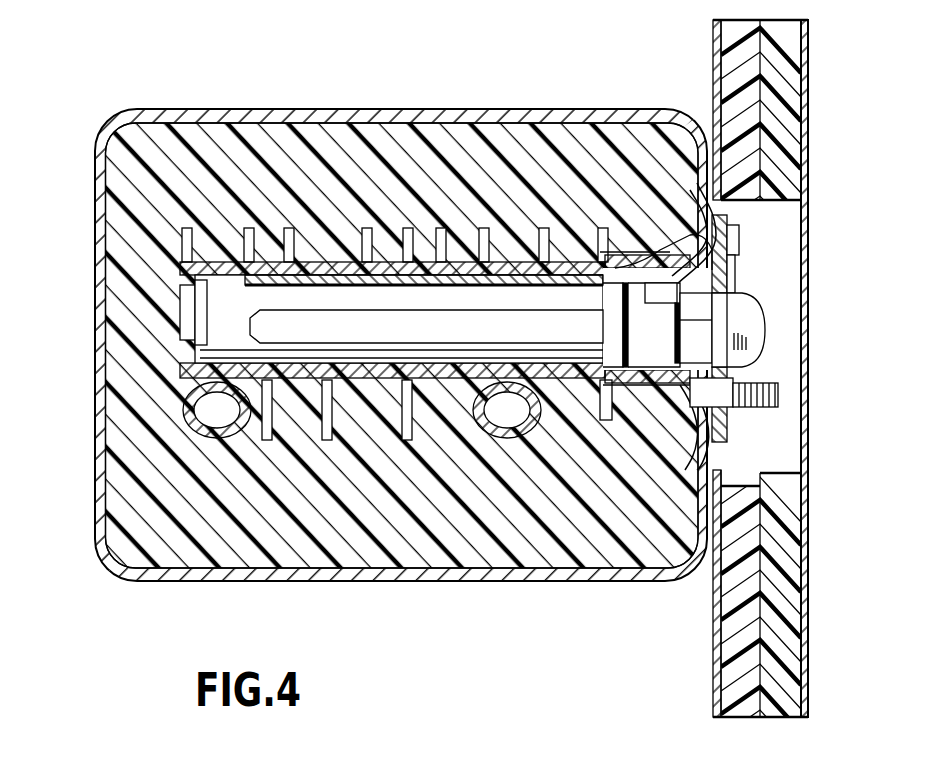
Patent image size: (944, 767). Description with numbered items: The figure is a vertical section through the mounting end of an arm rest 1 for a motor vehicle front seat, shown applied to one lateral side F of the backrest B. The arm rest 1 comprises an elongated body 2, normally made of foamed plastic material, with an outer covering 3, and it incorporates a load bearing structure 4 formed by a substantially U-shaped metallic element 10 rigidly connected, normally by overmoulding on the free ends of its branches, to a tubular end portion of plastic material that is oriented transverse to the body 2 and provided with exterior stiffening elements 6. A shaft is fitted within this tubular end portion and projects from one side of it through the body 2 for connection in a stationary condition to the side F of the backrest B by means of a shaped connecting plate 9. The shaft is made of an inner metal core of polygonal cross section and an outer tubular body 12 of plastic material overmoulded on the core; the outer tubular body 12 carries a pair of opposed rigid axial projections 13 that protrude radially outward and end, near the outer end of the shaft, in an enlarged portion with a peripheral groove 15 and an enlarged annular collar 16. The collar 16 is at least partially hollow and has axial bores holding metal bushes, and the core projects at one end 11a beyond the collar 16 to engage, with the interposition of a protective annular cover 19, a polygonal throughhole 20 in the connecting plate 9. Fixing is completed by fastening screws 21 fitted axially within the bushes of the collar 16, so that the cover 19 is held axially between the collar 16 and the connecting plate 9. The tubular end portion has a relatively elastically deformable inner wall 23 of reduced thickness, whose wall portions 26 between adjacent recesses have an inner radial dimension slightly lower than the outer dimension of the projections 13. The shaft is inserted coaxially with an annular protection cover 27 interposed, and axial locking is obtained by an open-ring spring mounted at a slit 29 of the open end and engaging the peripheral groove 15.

The arm rest 1 is at (396, 100).
The elongated body 2 is at (252, 128).
The outer covering 3 is at (178, 109).
The load bearing structure 4 is at (500, 240).
The exterior stiffening elements 6 is at (330, 248).
The shaped connecting plate 9 is at (765, 248).
The U-shaped metallic element 10 is at (200, 390).
The end of the metal core 11a is at (752, 345).
The outer tubular body 12 is at (222, 300).
The rigid axial projections 13 is at (268, 328).
The peripheral groove 15 is at (620, 325).
The enlarged annular collar 16 is at (712, 318).
The protective annular cover 19 is at (770, 200).
The polygonal throughhole 20 is at (760, 298).
The fastening screws 21 is at (800, 392).
The inner wall 23 is at (430, 245).
The wall portions 26 is at (445, 283).
The annular protection cover 27 is at (655, 200).
The slit 29 is at (620, 280).
The lateral side of the backrest F is at (713, 628).
The backrest B is at (742, 690).